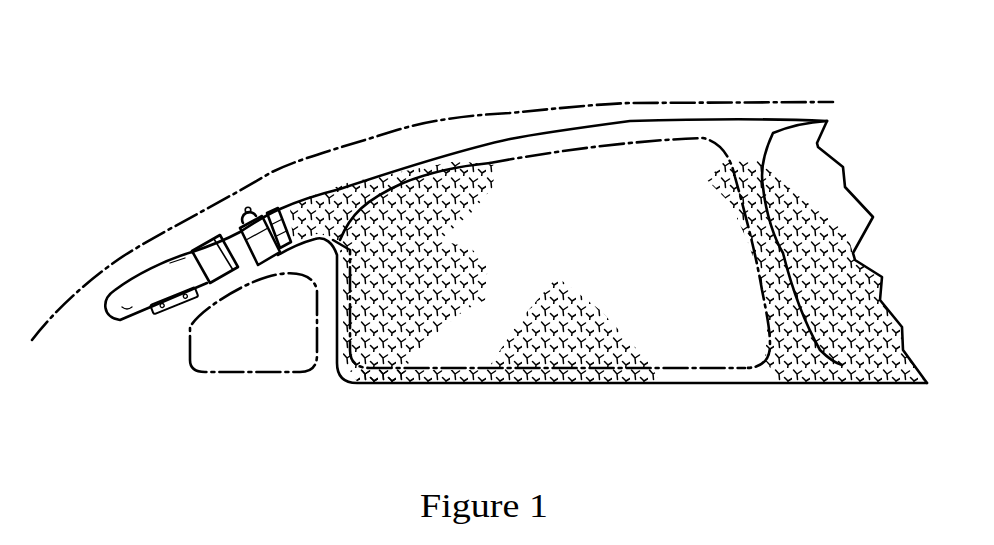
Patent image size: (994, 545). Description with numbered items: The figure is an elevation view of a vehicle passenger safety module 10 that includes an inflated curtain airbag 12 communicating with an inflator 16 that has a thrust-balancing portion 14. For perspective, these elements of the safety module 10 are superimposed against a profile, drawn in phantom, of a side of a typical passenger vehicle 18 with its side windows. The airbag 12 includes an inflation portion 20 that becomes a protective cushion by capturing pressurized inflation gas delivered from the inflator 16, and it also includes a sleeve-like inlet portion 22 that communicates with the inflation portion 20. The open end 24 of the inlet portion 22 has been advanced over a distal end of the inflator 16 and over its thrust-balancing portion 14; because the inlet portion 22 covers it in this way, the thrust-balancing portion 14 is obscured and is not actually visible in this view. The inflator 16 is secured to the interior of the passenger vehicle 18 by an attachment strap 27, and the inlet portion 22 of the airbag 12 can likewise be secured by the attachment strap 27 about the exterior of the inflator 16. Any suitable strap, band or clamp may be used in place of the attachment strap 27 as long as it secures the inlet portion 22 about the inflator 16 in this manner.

The vehicle passenger safety module 10 is at (420, 403).
The inflated curtain airbag 12 is at (542, 68).
The thrust-balancing portion 14 is at (252, 282).
The inflator 16 is at (174, 334).
The passenger vehicle 18 is at (845, 345).
The inflation portion 20 is at (686, 358).
The inlet portion 22 is at (274, 196).
The open end 24 is at (238, 246).
The attachment strap 27 is at (200, 258).